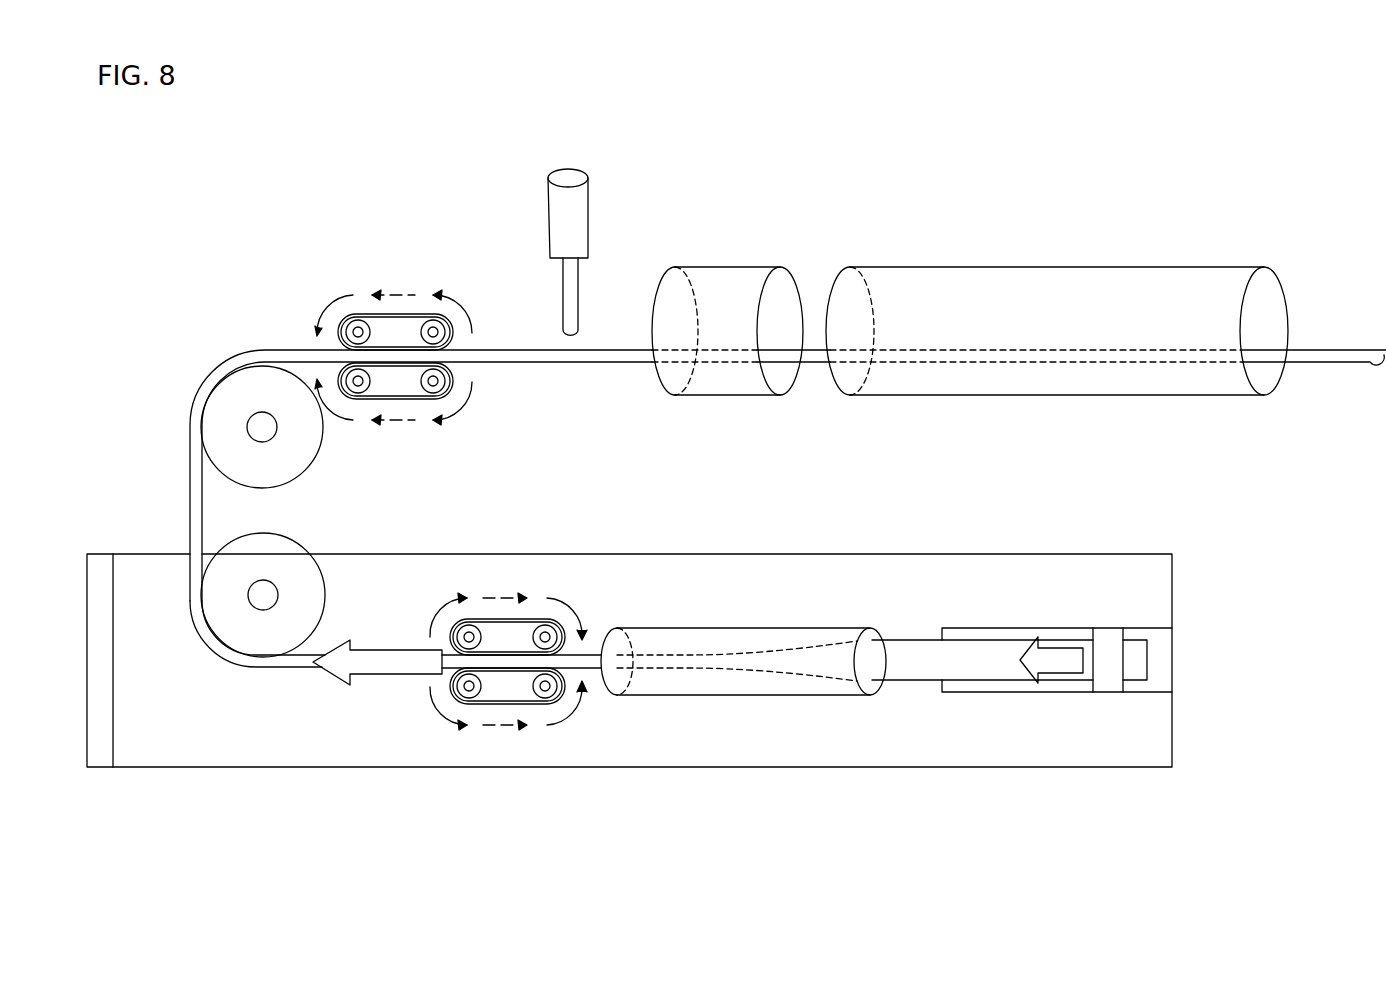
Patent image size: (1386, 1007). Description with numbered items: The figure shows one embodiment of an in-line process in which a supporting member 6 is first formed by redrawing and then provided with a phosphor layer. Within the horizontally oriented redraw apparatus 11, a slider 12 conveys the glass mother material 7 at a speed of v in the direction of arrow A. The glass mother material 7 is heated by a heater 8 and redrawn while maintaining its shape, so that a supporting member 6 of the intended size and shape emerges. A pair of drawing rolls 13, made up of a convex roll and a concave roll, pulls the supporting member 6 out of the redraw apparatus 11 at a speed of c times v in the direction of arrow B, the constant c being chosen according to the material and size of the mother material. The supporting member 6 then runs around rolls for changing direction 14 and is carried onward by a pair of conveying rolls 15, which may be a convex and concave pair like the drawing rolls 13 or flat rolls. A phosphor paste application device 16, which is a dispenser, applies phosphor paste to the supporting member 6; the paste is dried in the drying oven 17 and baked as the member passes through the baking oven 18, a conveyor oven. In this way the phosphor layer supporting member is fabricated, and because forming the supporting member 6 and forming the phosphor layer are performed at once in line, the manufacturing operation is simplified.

The supporting member 6 is at (592, 673).
The glass mother material 7 is at (913, 680).
The heater 8 is at (752, 695).
The redraw apparatus 11 is at (1177, 743).
The slider 12 is at (1107, 630).
The pair of drawing rolls 13 is at (512, 708).
The rolls for changing direction 14 is at (287, 537).
The pair of conveying rolls 15 is at (395, 313).
The phosphor paste application device 16 is at (567, 172).
The drying oven 17 is at (732, 267).
The baking oven 18 is at (1100, 266).
The direction of conveying the glass mother material A is at (1047, 645).
The direction of pulling the supporting member B is at (392, 652).